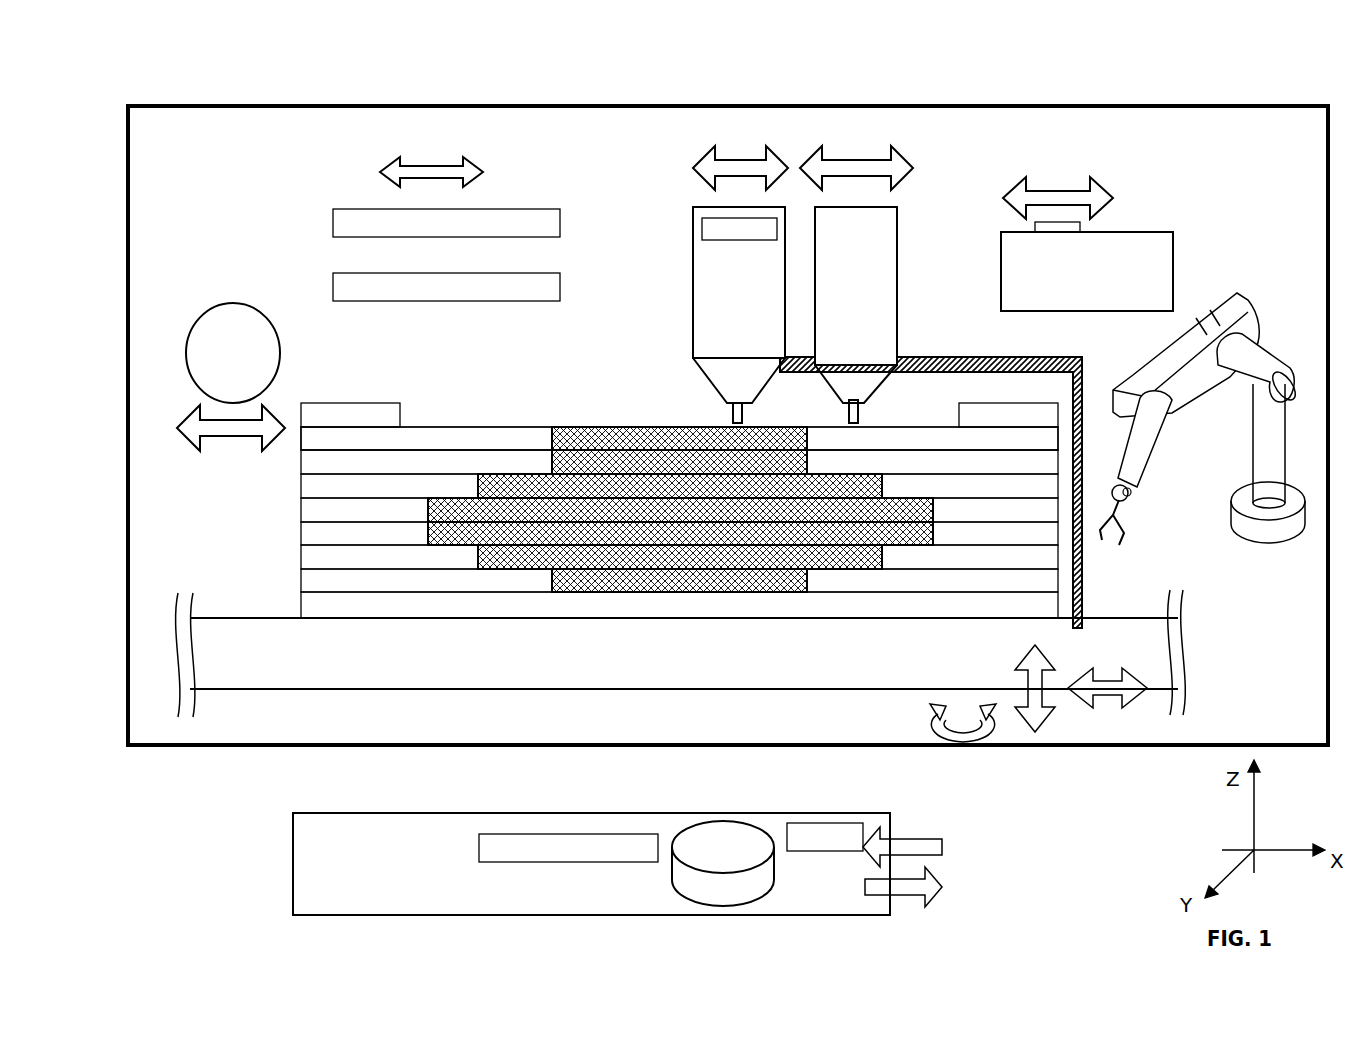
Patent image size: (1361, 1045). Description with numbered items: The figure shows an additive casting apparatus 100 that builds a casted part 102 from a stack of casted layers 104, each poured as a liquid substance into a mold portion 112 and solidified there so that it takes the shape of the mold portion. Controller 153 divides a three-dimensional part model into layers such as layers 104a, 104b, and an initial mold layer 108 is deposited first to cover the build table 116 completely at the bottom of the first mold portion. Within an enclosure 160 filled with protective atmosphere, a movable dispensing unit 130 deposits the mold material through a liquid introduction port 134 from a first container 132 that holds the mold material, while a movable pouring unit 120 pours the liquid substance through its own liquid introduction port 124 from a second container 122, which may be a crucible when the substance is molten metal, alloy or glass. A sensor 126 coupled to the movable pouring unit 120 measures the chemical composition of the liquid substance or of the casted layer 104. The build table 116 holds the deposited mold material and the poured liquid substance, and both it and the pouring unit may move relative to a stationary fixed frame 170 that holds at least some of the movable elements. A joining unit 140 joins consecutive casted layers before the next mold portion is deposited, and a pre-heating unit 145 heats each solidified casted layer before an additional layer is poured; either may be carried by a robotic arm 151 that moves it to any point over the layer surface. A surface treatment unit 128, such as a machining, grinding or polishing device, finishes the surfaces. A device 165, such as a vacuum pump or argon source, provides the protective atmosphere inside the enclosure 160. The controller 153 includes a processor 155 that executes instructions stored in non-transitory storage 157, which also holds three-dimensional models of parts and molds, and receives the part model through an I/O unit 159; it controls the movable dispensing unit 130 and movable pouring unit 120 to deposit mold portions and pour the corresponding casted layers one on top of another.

The additive casting apparatus 100 is at (433, 99).
The casted part 102 is at (640, 385).
The casted layer 104 is at (565, 420).
The casted layer 104a is at (622, 583).
The casted layer 104b is at (573, 570).
The initial mold layer 108 is at (662, 620).
The mold portion 112 is at (300, 581).
The build table 116 is at (408, 690).
The movable pouring unit 120 is at (693, 275).
The second container 122 is at (700, 303).
The liquid introduction port 124 is at (733, 413).
The sensor 126 is at (703, 218).
The surface treatment unit 128 is at (190, 383).
The movable dispensing unit 130 is at (897, 247).
The first container 132 is at (897, 300).
The liquid introduction port 134 is at (858, 415).
The joining unit 140 is at (537, 273).
The pre-heating unit 145 is at (527, 209).
The robotic arm 151 is at (1270, 540).
The controller 153 is at (465, 815).
The processor 155 is at (582, 834).
The non-transitory storage 157 is at (702, 843).
The I/O unit 159 is at (825, 823).
The enclosure 160 is at (1197, 105).
The device configured to provide the protective atmosphere 165 is at (1097, 232).
The fixed frame 170 is at (1082, 584).